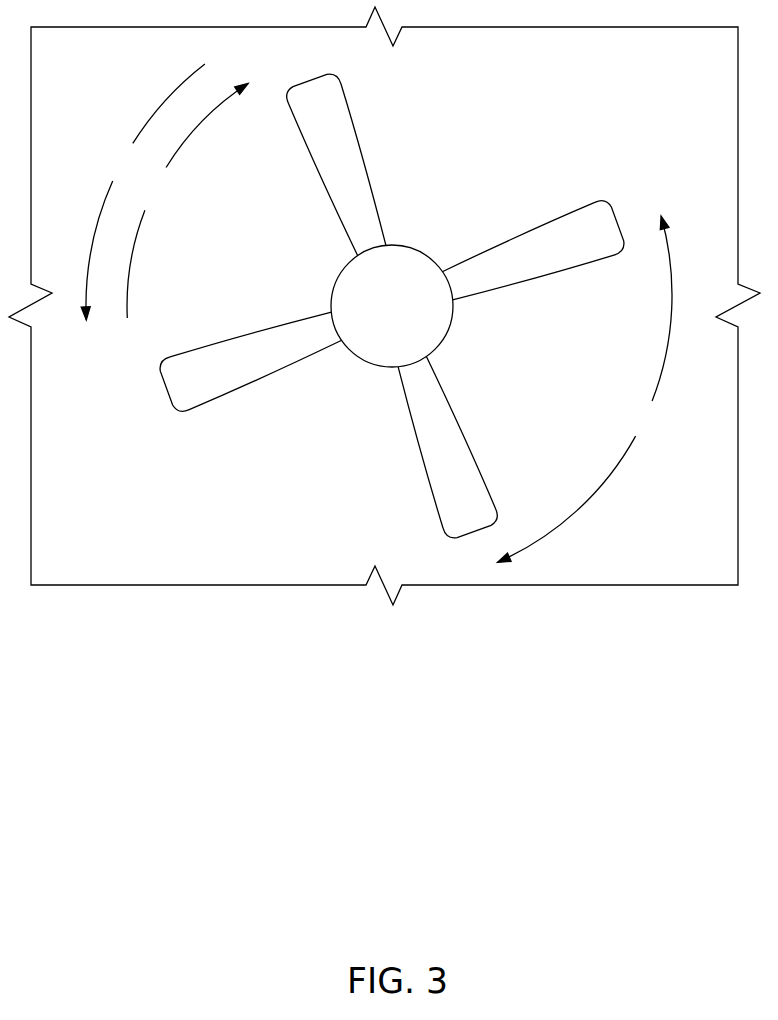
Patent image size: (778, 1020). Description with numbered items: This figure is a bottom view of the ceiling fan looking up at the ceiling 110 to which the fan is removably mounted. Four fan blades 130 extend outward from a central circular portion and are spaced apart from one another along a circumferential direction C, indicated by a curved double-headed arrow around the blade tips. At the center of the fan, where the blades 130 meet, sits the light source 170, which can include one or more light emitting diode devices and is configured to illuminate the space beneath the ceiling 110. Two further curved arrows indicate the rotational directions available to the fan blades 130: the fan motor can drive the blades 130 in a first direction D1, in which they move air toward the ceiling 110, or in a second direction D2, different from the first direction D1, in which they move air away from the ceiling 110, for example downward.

The ceiling 110 is at (684, 72).
The fan blades 130 is at (300, 120).
The light source 170 is at (371, 318).
The circumferential direction C is at (584, 389).
The first direction D1 is at (187, 201).
The second direction D2 is at (143, 192).